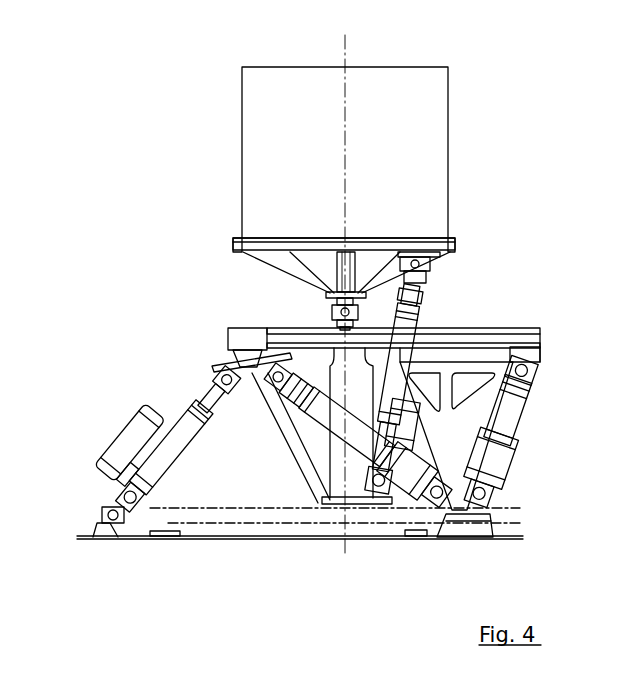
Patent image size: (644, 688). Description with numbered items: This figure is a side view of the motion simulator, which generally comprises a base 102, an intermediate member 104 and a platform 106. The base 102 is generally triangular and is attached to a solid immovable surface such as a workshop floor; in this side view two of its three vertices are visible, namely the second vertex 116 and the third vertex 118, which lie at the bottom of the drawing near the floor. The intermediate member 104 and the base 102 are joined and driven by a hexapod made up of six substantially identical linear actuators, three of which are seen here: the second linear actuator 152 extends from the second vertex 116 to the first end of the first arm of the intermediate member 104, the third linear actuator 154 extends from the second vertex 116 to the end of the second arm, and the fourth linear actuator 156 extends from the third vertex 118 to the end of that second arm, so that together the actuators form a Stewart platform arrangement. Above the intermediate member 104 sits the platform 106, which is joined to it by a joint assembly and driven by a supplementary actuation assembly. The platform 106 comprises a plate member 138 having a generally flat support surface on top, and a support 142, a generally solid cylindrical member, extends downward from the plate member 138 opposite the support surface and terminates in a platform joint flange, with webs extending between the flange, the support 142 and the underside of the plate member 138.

The base 102 is at (370, 558).
The intermediate member 104 is at (551, 334).
The platform 106 is at (494, 246).
The second vertex 116 is at (468, 532).
The third vertex 118 is at (98, 535).
The plate member 138 is at (388, 240).
The support 142 is at (342, 275).
The second linear actuator 152 is at (516, 412).
The third linear actuator 154 is at (327, 420).
The fourth linear actuator 156 is at (172, 455).